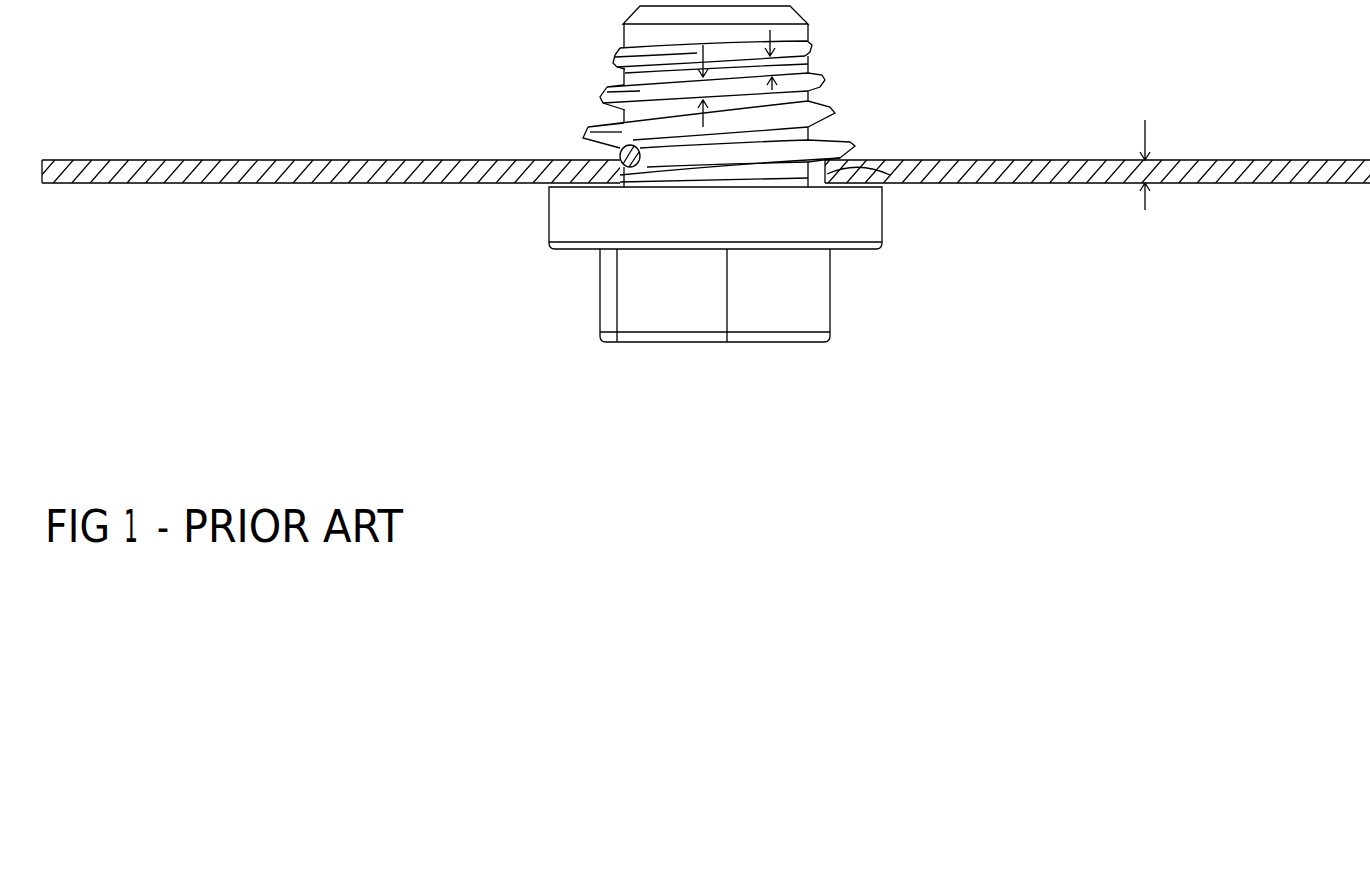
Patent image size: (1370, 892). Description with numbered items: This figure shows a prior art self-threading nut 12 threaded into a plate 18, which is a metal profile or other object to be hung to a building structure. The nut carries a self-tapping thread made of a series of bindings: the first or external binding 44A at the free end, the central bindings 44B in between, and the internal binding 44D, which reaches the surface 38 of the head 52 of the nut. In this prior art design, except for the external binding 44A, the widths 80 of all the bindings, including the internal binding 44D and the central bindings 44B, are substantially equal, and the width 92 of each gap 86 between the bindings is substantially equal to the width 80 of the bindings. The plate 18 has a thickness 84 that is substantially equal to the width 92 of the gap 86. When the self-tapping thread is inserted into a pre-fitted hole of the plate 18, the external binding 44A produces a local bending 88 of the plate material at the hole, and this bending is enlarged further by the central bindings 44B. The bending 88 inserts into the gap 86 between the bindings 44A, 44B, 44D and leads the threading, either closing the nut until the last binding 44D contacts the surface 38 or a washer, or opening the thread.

The prior art self-threading nut 12 is at (688, 171).
The plate 18 is at (370, 172).
The surface of the head of the nut 38 is at (873, 176).
The external binding 44A is at (810, 43).
The central bindings 44B is at (823, 77).
The internal binding 44D is at (840, 145).
The head of the nut 52 is at (517, 219).
The width of a binding 80 is at (615, 61).
The thickness of the plate 84 is at (1166, 162).
The gap between the bindings 86 is at (793, 62).
The local bending 88 is at (620, 150).
The width of the gap 92 is at (773, 47).